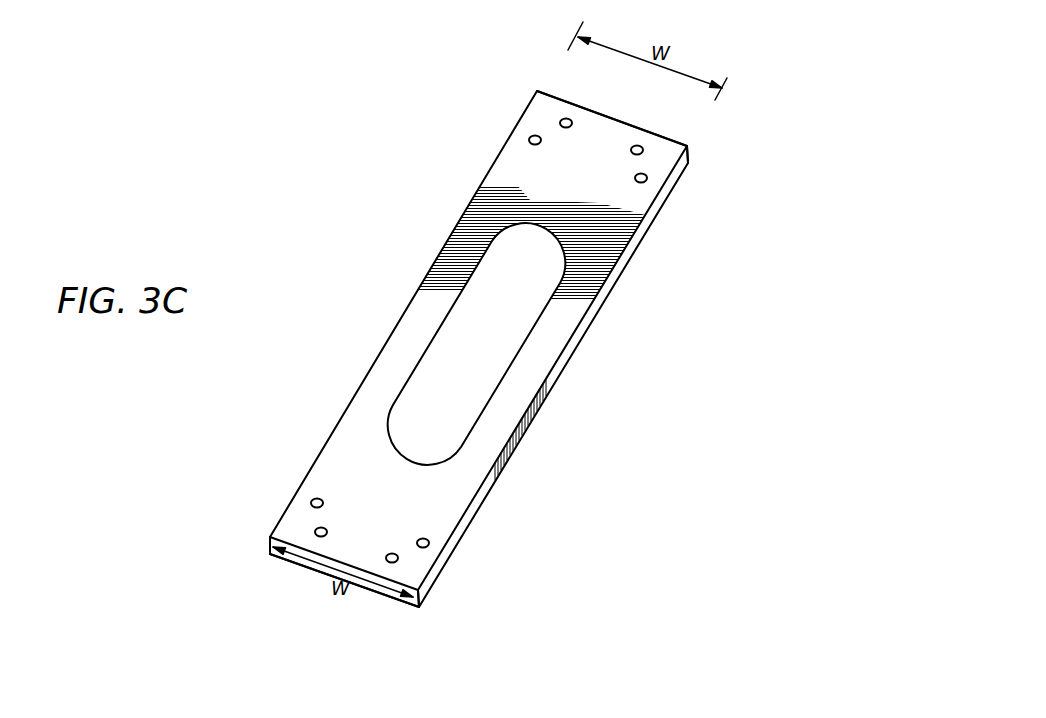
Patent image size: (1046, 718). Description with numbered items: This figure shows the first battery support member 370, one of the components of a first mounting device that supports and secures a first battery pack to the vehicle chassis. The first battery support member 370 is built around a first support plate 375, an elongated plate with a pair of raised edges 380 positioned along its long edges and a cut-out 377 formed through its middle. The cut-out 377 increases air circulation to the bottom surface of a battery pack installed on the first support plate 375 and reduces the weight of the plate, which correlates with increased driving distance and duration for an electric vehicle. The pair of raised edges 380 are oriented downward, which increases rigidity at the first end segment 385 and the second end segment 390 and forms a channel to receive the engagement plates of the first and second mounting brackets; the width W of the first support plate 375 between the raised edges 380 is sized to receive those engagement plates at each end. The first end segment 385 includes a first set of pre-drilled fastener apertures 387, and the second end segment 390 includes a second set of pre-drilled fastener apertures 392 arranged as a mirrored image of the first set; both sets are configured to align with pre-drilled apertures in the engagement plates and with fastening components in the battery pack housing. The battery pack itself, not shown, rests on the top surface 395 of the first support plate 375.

The first battery support member 370 is at (481, 125).
The first support plate 375 is at (447, 237).
The cut-out 377 is at (463, 387).
The raised edges 380 is at (270, 554).
The first end segment 385 is at (687, 147).
The first set of pre-drilled fastener apertures 387 is at (584, 139).
The second end segment 390 is at (405, 580).
The second set of pre-drilled fastener apertures 392 is at (384, 534).
The top surface 395 is at (477, 468).